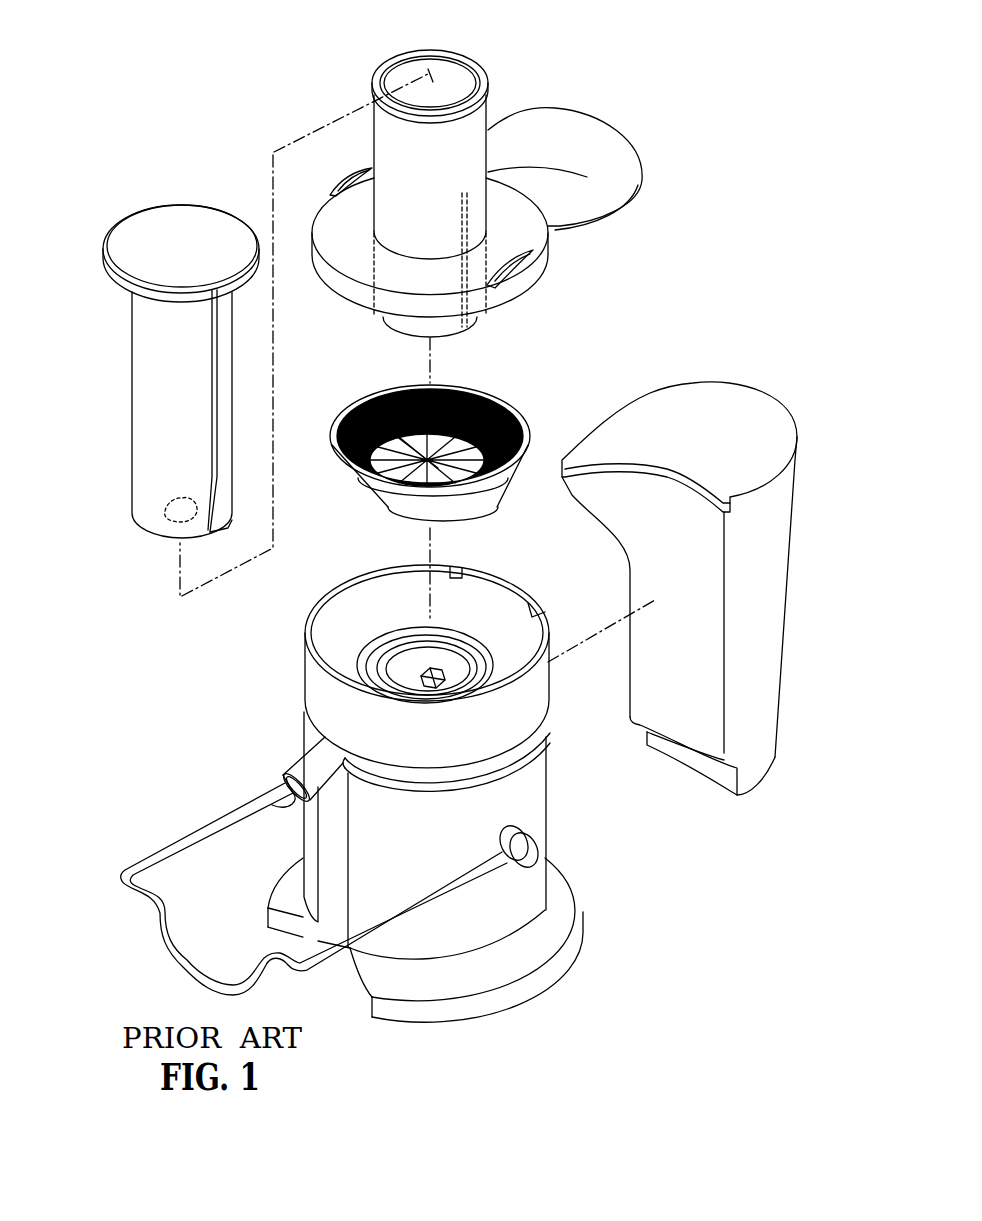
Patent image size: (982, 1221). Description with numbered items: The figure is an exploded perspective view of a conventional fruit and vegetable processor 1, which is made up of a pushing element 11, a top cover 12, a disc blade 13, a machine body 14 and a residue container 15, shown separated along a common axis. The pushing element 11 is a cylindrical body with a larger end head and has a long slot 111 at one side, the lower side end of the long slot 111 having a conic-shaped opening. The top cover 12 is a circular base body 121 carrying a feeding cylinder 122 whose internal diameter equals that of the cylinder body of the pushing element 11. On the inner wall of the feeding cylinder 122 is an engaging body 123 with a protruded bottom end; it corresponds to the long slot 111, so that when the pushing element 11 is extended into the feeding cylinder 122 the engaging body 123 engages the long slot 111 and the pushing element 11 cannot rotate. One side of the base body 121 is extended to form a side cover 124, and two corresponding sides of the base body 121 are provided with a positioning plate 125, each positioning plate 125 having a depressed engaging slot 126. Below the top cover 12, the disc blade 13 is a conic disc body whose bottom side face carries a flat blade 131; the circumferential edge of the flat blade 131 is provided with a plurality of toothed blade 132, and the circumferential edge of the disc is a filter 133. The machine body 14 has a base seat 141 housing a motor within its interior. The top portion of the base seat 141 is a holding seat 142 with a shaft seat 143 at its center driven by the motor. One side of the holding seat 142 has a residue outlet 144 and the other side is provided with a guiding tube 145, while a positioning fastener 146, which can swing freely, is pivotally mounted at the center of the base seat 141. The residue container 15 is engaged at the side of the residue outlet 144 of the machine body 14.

The fruit and vegetable processor 1 is at (722, 165).
The pushing element 11 is at (186, 371).
The long slot 111 is at (222, 352).
The top cover 12 is at (450, 190).
The base body 121 is at (327, 212).
The feeding cylinder 122 is at (393, 147).
The engaging body 123 is at (473, 320).
The side cover 124 is at (578, 137).
The positioning plate 125 is at (520, 270).
The engaging slot 126 is at (513, 252).
The disc blade 13 is at (483, 427).
The flat blade 131 is at (388, 390).
The toothed blade 132 is at (513, 430).
The filter 133 is at (358, 408).
The machine body 14 is at (404, 791).
The base seat 141 is at (550, 800).
The holding seat 142 is at (308, 682).
The shaft seat 143 is at (417, 665).
The residue outlet 144 is at (250, 800).
The guiding tube 145 is at (283, 770).
The positioning fastener 146 is at (160, 853).
The residue container 15 is at (763, 672).